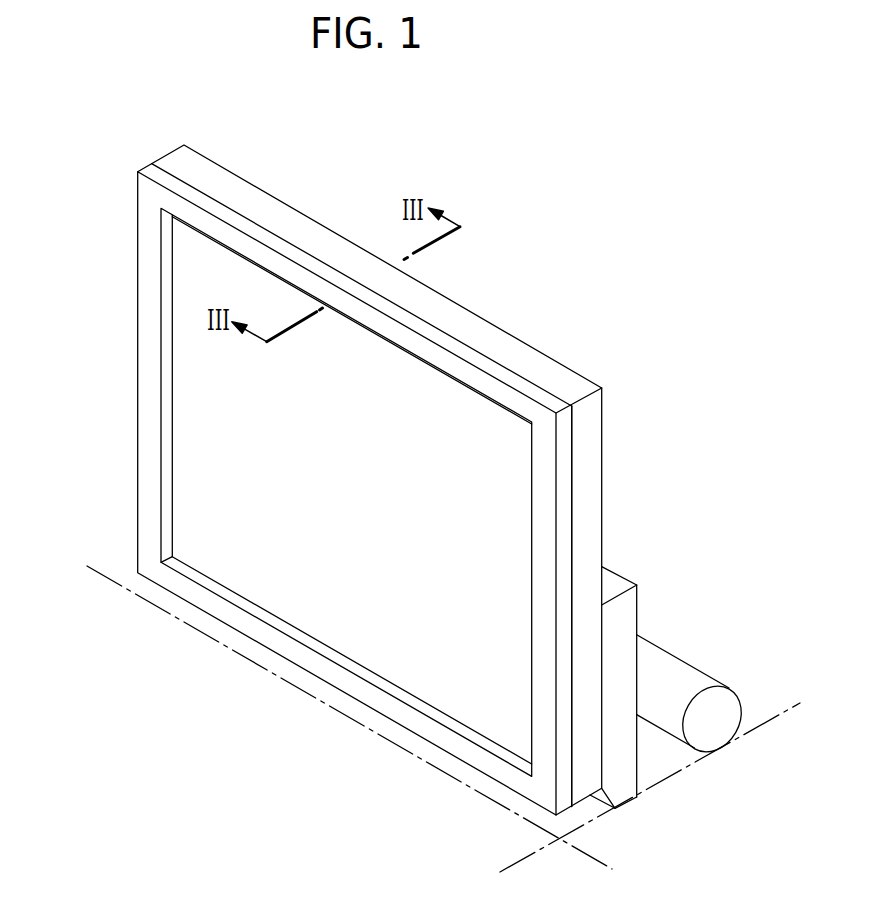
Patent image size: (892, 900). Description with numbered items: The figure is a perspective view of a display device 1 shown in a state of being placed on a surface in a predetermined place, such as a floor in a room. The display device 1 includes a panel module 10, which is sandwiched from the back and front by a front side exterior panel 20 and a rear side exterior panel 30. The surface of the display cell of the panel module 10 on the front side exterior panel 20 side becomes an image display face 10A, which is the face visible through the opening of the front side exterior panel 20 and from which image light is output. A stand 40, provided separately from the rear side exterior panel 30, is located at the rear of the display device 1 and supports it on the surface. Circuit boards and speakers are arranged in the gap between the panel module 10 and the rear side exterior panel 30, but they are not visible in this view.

The display device 1 is at (412, 458).
The panel module 10 is at (203, 344).
The image display face 10A is at (230, 437).
The front side exterior panel 20 is at (153, 172).
The rear side exterior panel 30 is at (207, 177).
The stand 40 is at (672, 678).